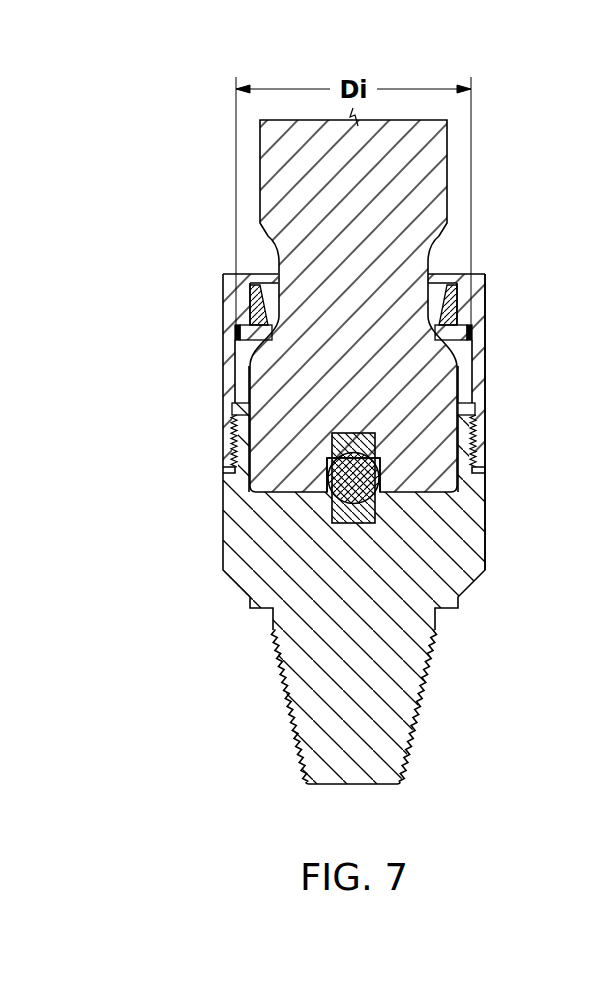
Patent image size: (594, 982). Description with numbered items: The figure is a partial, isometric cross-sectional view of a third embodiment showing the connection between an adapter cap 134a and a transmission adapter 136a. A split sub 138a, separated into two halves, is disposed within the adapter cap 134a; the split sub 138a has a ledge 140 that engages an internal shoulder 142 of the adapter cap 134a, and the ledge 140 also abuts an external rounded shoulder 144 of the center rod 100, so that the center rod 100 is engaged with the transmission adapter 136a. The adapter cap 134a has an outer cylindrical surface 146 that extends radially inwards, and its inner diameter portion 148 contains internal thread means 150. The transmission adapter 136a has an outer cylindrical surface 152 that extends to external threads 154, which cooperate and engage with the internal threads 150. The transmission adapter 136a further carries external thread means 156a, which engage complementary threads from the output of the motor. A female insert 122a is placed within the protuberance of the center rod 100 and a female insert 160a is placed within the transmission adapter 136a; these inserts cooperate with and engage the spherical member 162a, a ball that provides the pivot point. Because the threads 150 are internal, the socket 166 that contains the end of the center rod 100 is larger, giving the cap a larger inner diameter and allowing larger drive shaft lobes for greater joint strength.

The center rod 100 is at (212, 161).
The female insert 122a is at (338, 441).
The adapter cap 134a is at (485, 277).
The transmission adapter 136a is at (462, 602).
The split sub 138a is at (486, 328).
The ledge 140 is at (238, 339).
The internal shoulder 142 is at (248, 322).
The external rounded shoulder 144 is at (237, 351).
The outer cylindrical surface 146 is at (486, 363).
The inner diameter portion 148 is at (463, 389).
The internal thread means 150 is at (233, 444).
The outer cylindrical surface 152 is at (486, 484).
The external threads 154 is at (481, 435).
The external thread means 156a is at (417, 737).
The female insert 160a is at (358, 512).
The spherical member 162a is at (360, 510).
The socket 166 is at (472, 463).